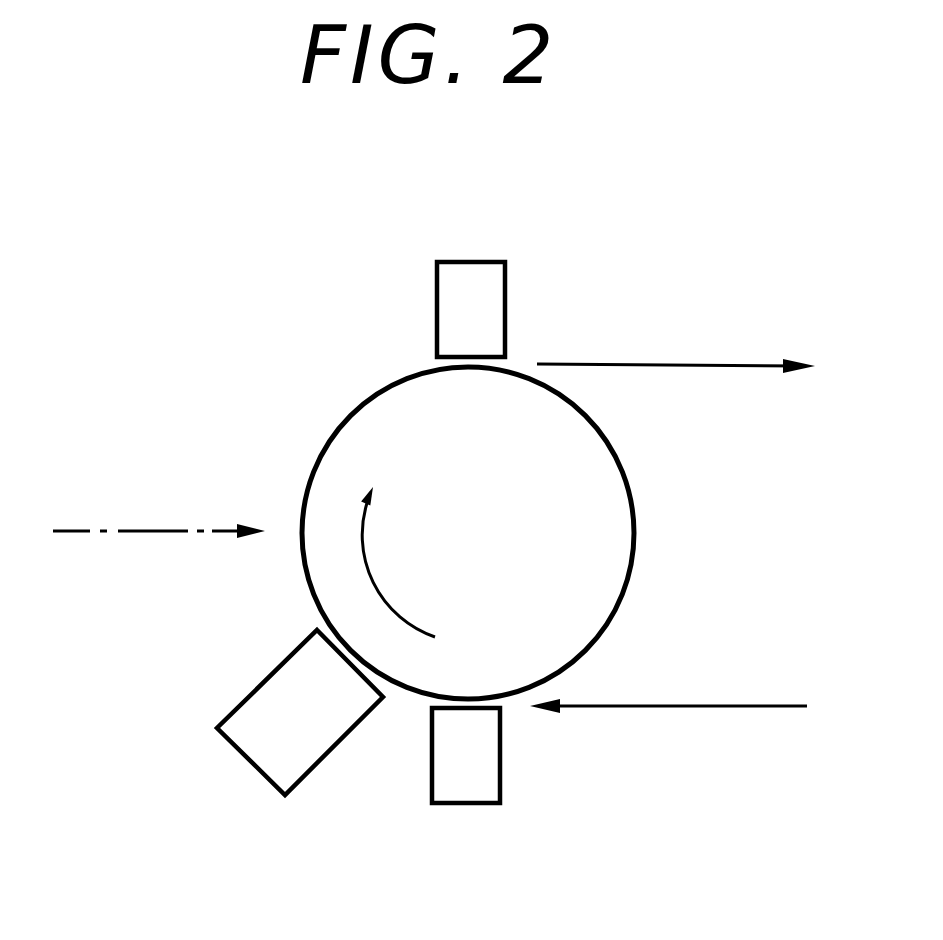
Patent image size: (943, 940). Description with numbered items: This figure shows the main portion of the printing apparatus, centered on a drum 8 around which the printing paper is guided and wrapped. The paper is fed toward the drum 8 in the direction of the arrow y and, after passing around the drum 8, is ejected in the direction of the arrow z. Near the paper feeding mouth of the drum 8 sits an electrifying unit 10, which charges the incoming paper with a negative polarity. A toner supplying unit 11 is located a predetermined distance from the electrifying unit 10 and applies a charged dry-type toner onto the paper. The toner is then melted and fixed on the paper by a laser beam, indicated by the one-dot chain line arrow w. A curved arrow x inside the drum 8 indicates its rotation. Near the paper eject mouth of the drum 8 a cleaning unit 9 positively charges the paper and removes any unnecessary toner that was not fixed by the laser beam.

The drum 8 is at (633, 493).
The cleaning unit 9 is at (468, 262).
The electrifying unit 10 is at (500, 762).
The toner supplying unit 11 is at (263, 677).
The laser beam w is at (146, 531).
The rotation direction x is at (365, 560).
The paper feeding direction y is at (688, 706).
The paper ejecting direction z is at (665, 364).